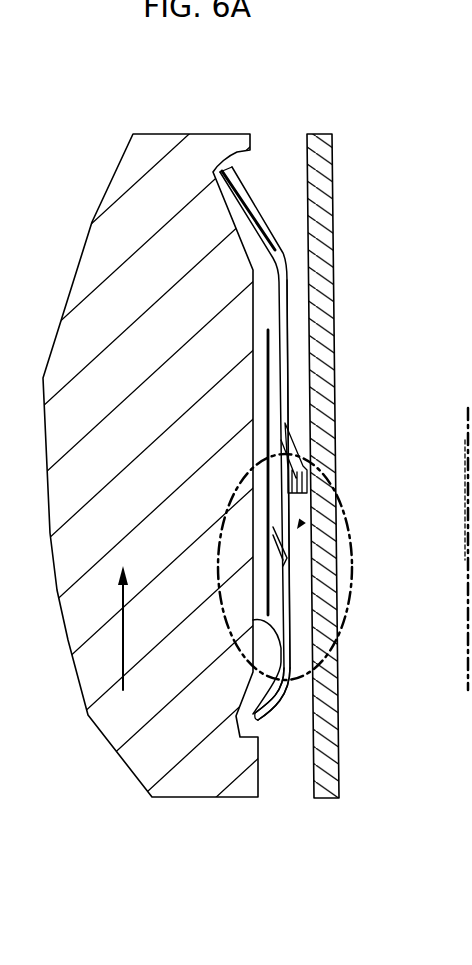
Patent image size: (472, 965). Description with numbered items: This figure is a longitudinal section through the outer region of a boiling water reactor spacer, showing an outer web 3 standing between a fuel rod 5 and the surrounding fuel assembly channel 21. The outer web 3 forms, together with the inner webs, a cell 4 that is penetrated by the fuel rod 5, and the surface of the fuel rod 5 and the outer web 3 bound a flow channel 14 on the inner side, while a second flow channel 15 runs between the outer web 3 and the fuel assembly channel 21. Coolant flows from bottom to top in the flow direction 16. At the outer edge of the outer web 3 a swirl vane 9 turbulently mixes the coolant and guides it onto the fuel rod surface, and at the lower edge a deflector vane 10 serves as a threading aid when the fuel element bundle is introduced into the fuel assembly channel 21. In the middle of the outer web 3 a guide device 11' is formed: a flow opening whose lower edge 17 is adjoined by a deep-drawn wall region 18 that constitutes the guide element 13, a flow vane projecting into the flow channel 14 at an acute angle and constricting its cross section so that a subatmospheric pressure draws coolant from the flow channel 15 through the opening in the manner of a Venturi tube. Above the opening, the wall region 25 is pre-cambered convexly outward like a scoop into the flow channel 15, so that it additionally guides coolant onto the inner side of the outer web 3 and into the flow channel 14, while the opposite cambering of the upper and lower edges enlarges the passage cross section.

The fuel rod 5 is at (192, 165).
The swirl vanes 9 is at (250, 203).
The cell 4 is at (301, 460).
The outer web 3 is at (288, 287).
The flow channel 15 is at (298, 323).
The pre-cambered wall region 25 is at (296, 448).
The guide device 11' is at (382, 483).
The lower edge 17 is at (468, 493).
The guide element 13 is at (371, 548).
The deep-drawn wall region 18 is at (280, 546).
The flow channel 14 is at (270, 661).
The flow direction 16 is at (122, 634).
The deflector vanes 10 is at (275, 712).
The fuel assembly channel 21 is at (328, 780).